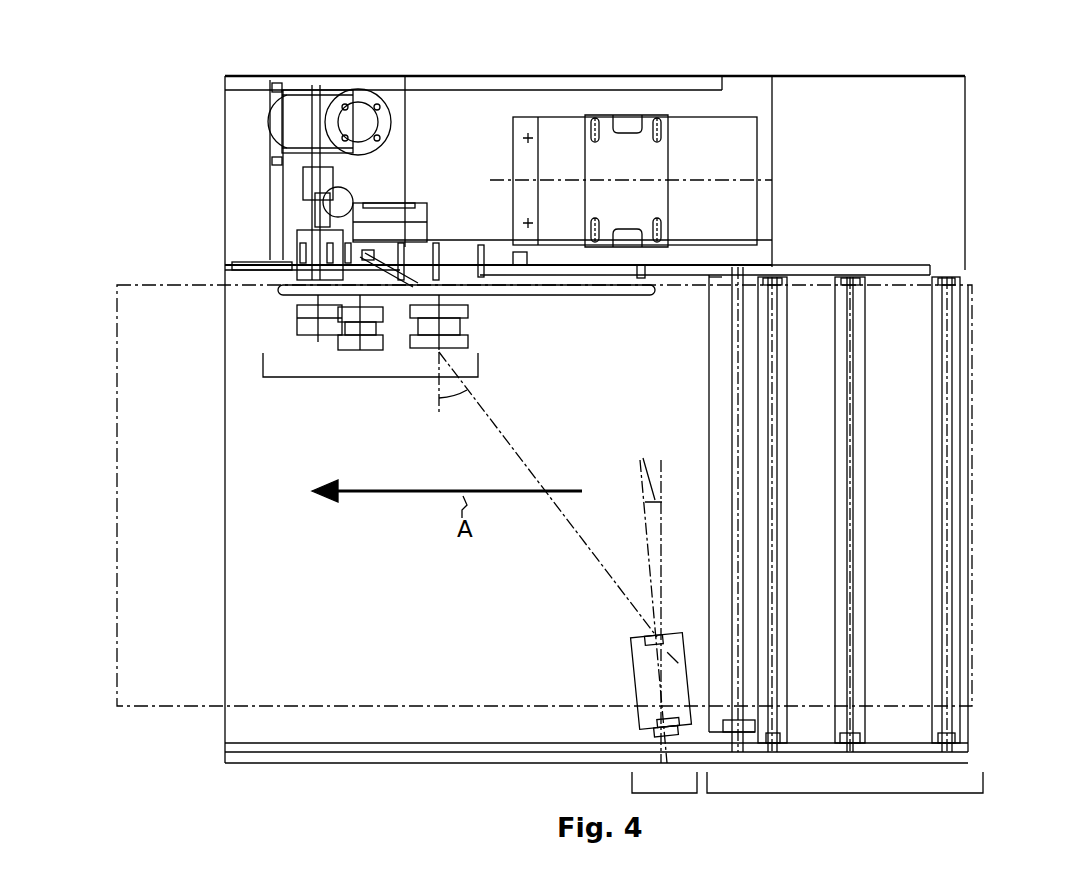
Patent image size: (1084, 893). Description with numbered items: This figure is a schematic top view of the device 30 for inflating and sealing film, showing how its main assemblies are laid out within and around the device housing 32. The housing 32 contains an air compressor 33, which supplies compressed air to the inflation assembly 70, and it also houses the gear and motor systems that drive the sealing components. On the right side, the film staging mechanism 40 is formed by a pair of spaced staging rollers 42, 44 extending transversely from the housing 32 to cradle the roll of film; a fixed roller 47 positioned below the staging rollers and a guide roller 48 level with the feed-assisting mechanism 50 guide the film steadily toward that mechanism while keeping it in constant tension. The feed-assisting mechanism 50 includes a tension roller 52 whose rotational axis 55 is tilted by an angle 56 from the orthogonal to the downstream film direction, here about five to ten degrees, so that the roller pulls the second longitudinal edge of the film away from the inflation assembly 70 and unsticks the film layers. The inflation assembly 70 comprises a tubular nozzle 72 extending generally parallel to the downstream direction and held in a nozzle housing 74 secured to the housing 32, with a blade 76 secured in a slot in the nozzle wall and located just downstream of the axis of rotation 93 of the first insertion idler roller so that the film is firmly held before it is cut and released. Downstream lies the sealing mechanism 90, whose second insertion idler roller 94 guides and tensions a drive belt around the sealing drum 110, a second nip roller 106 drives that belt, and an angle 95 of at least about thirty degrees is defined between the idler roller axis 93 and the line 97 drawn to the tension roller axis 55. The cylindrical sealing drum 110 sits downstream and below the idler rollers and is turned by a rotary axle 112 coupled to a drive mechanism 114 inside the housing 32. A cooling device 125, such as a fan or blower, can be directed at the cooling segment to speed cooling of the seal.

The device 30 is at (196, 191).
The device housing 32 is at (745, 95).
The air compressor 33 is at (725, 145).
The film staging mechanism 40 is at (818, 794).
The staging roller 42 is at (860, 480).
The staging roller 44 is at (953, 393).
The fixed roller 47 is at (785, 575).
The guide roller 48 is at (715, 402).
The feed-assisting mechanism 50 is at (675, 794).
The tension roller 52 is at (628, 688).
The rotational axis 55 is at (649, 565).
The angle 56 is at (645, 458).
The inflation assembly 70 is at (592, 308).
The nozzle 72 is at (538, 300).
The nozzle housing 74 is at (438, 220).
The blade 76 is at (377, 257).
The sealing mechanism 90 is at (330, 378).
The axis of rotation 93 is at (437, 398).
The second insertion idler roller 94 is at (383, 322).
The angle 95 is at (455, 400).
The axis 97 is at (510, 440).
The second nip roller 106 is at (472, 323).
The sealing drum 110 is at (297, 312).
The rotary axle 112 is at (300, 240).
The drive mechanism 114 is at (297, 195).
The cooling device 125 is at (253, 270).